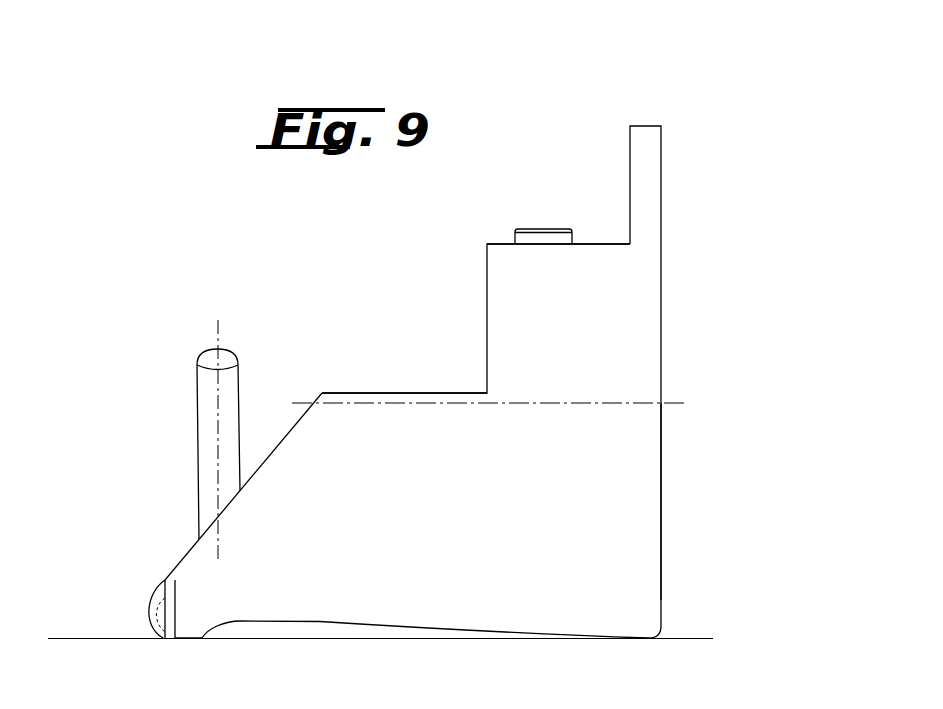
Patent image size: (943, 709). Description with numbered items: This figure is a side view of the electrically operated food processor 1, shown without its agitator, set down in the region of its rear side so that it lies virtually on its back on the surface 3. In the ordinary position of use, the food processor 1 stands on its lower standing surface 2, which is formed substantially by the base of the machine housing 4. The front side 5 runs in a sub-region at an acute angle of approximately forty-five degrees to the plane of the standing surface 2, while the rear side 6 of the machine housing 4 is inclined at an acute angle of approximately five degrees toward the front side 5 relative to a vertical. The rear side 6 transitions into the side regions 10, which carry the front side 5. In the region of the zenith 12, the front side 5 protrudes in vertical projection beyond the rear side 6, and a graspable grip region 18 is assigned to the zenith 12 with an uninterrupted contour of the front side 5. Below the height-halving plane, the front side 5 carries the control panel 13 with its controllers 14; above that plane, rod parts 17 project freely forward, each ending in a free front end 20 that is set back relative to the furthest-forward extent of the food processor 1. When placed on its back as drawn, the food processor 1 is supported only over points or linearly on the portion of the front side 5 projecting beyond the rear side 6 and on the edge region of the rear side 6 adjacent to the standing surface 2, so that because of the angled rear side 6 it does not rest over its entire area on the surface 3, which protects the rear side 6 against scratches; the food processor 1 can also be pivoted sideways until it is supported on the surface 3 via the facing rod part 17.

The food processor 1 is at (655, 75).
The standing surface 2 is at (661, 343).
The surface 3 is at (685, 638).
The machine housing 4 is at (636, 464).
The front side 5 is at (415, 393).
The rear side 6 is at (350, 630).
The side regions 10 is at (625, 290).
The zenith 12 is at (152, 623).
The control panel 13 is at (603, 244).
The controllers 14 is at (528, 237).
The rod parts 17 is at (185, 444).
The grip region 18 is at (157, 573).
The free front end 20 is at (223, 352).